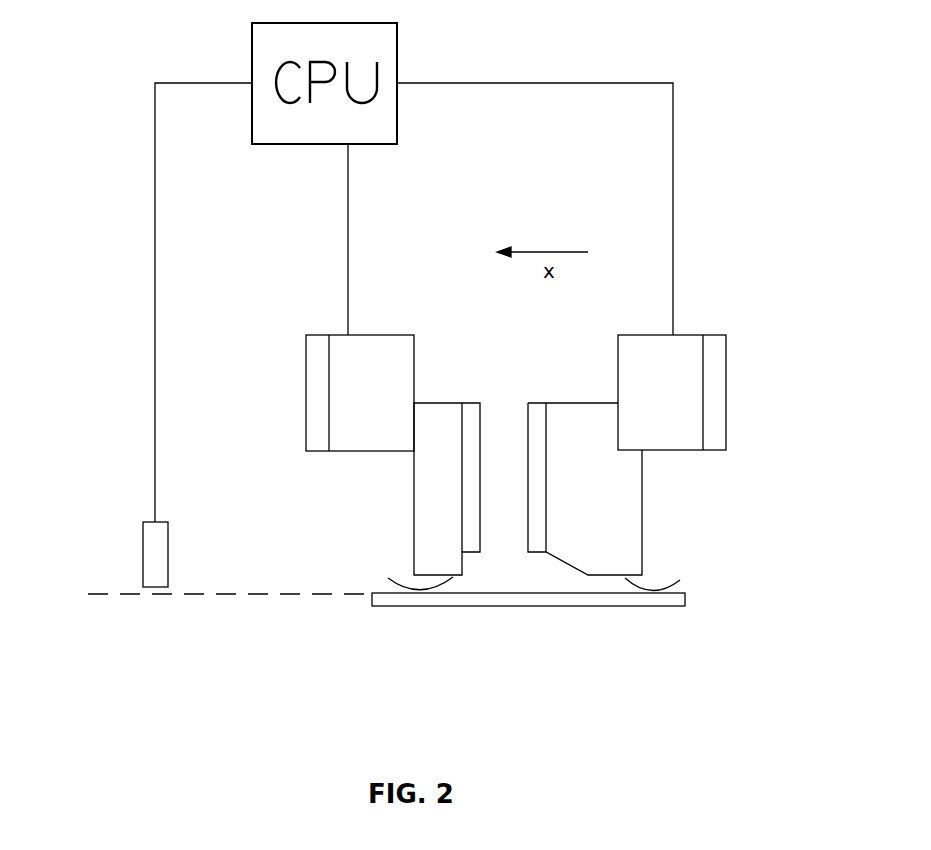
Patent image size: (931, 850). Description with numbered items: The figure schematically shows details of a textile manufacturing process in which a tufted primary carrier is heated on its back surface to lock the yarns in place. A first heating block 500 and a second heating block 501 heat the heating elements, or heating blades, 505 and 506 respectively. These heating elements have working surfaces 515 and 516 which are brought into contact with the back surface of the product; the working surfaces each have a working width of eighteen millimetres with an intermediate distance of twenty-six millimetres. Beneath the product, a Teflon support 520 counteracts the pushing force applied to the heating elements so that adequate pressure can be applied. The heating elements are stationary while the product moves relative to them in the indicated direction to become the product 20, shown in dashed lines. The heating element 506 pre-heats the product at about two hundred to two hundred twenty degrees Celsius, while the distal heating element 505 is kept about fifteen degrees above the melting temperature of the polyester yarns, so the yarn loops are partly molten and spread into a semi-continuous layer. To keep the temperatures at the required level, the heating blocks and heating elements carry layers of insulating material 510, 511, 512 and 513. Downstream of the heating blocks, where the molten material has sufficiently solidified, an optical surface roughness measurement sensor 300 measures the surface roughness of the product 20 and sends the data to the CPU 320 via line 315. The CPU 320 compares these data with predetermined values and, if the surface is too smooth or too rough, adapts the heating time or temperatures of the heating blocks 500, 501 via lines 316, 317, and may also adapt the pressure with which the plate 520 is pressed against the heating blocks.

The product 20 is at (97, 590).
The optical surface roughness measurement sensor 300 is at (168, 560).
The line 315 is at (155, 232).
The line 316 is at (348, 212).
The line 317 is at (673, 160).
The CPU 320 is at (397, 37).
The first heating block 500 is at (352, 335).
The second heating block 501 is at (676, 335).
The heating element 505 is at (437, 402).
The heating element 506 is at (612, 402).
The layer of insulating material 510 is at (306, 403).
The layer of insulating material 511 is at (726, 419).
The layer of insulating material 512 is at (480, 432).
The layer of insulating material 513 is at (527, 507).
The working surface 515 is at (399, 569).
The working surface 516 is at (682, 577).
The Teflon support 520 is at (623, 607).